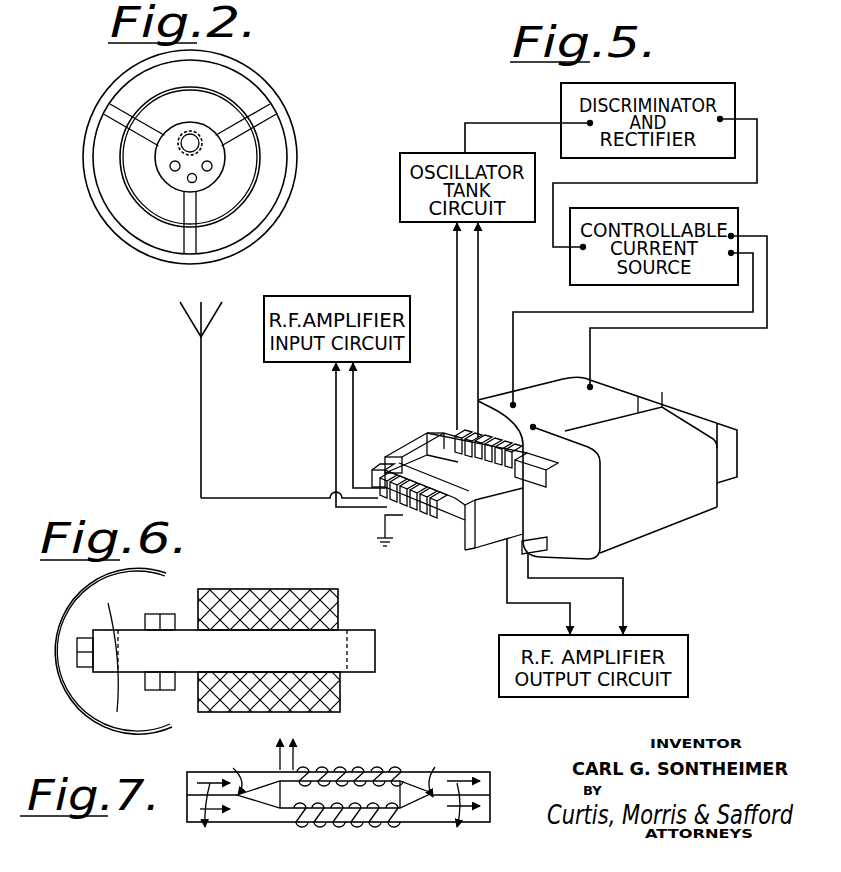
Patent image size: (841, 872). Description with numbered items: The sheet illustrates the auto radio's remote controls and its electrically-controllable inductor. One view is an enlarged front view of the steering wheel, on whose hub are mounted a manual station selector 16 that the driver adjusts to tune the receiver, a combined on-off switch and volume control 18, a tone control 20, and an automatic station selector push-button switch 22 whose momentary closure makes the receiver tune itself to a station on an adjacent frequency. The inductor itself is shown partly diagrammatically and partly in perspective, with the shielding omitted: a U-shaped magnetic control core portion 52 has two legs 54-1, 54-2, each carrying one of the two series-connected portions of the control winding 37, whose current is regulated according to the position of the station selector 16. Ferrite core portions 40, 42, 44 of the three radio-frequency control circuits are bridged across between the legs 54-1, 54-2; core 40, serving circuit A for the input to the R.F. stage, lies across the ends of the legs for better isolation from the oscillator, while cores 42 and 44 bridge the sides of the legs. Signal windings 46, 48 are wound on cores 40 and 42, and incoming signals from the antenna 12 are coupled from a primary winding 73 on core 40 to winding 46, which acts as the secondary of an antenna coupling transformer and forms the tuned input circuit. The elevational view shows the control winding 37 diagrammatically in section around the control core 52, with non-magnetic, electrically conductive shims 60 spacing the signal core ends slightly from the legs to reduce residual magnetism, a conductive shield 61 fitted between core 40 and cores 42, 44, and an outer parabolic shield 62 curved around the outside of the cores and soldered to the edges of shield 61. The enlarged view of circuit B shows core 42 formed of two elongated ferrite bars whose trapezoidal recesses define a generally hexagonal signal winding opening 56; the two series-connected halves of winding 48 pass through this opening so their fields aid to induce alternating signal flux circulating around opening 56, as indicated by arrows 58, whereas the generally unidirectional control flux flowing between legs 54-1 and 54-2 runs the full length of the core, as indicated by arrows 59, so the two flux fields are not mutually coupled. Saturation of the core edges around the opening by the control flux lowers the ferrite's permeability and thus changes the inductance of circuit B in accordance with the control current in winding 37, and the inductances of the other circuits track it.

In FIG. 5, the antenna 12 is at (192, 323).
In FIG. 2, the manual station selector 16 is at (192, 134).
In FIG. 2, the combined on-off switch and volume control 18 is at (170, 166).
In FIG. 2, the tone control 20 is at (212, 166).
In FIG. 2, the automatic station selector push-button switch 22 is at (197, 182).
In FIG. 5, the control winding 37 is at (661, 415).
In FIG. 6, the control winding 37 is at (283, 590).
In FIG. 5, the ferrite core portion 40 is at (376, 477).
In FIG. 6, the ferrite core portion 40 is at (75, 641).
In FIG. 5, the ferrite core portion 42 is at (432, 426).
In FIG. 6, the ferrite core portion 42 is at (168, 613).
In FIG. 7, the ferrite core portion 42 is at (448, 764).
In FIG. 5, the ferrite core portion 44 is at (532, 550).
In FIG. 6, the ferrite core portion 44 is at (152, 691).
In FIG. 5, the signal winding 46 is at (410, 492).
In FIG. 5, the signal winding 48 is at (467, 459).
In FIG. 7, the signal winding 48 is at (343, 768).
In FIG. 5, the U-shaped magnetic control core portion 52 is at (698, 411).
In FIG. 6, the U-shaped magnetic control core portion 52 is at (377, 656).
In FIG. 5, the leg of the control yoke 54-1 is at (400, 456).
In FIG. 6, the leg of the control yoke 54-1 is at (183, 670).
In FIG. 5, the leg of the control yoke 54-2 is at (488, 548).
In FIG. 7, the signal winding opening 56 is at (354, 803).
In FIG. 7, the arrows indicating signal flux 58 is at (330, 772).
In FIG. 7, the arrows indicating control flux 59 is at (342, 816).
In FIG. 6, the non-magnetic shims 60 is at (141, 628).
In FIG. 6, the shield of electrically-conductive material 61 is at (117, 711).
In FIG. 6, the outer parabolic shield 62 is at (57, 658).
In FIG. 5, the primary winding 73 is at (418, 522).
In FIG. 5, the radio-frequency control circuit A is at (432, 539).
In FIG. 5, the radio-frequency control circuit B is at (443, 406).
In FIG. 7, the radio-frequency control circuit B is at (390, 764).